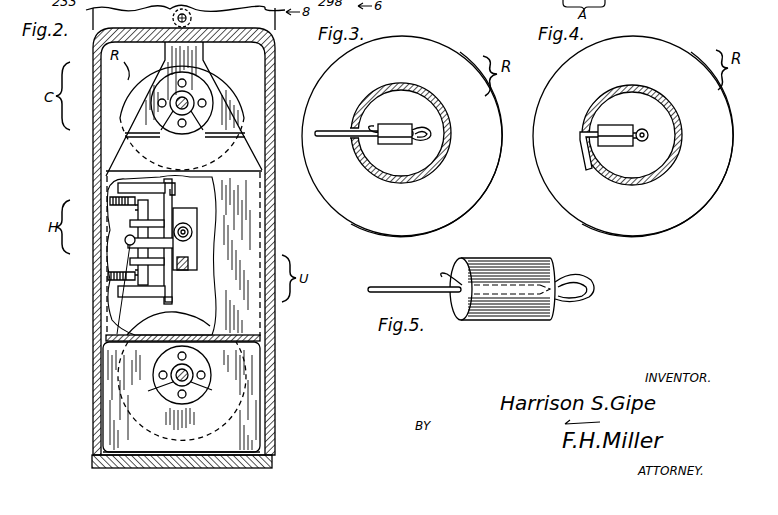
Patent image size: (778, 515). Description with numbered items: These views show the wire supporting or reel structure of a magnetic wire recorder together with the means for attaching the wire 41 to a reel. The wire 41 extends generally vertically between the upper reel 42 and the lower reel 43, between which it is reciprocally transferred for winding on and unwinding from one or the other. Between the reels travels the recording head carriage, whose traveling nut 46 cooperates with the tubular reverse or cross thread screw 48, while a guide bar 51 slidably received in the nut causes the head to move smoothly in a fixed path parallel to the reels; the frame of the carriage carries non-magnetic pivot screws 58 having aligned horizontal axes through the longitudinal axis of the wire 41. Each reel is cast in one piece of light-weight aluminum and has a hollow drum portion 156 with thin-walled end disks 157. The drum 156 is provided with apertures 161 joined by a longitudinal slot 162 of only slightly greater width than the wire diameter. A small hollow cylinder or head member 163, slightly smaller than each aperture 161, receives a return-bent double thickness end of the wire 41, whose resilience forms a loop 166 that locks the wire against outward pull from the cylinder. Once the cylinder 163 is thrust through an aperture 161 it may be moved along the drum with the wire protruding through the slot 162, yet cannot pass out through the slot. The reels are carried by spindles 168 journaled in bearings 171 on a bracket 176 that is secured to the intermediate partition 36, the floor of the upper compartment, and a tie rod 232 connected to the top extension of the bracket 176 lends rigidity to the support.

In FIG. 2, the intermediate partition 36 is at (127, 458).
In FIG. 2, the wire 41 is at (122, 310).
In FIG. 3, the wire 41 is at (330, 140).
In FIG. 4, the wire 41 is at (584, 164).
In FIG. 5, the wire 41 is at (382, 287).
In FIG. 2, the upper reel 42 is at (240, 82).
In FIG. 3, the upper reel 42 is at (470, 206).
In FIG. 4, the upper reel 42 is at (703, 206).
In FIG. 2, the lower reel 43 is at (186, 308).
In FIG. 2, the traveling nut 46 is at (197, 227).
In FIG. 2, the reverse or cross thread screw 48 is at (183, 222).
In FIG. 2, the guide bar 51 is at (188, 270).
In FIG. 2, the pivot screws 58 is at (128, 236).
In FIG. 3, the hollow drum portion 156 is at (438, 98).
In FIG. 4, the hollow drum portion 156 is at (618, 78).
In FIG. 3, the end disks 157 is at (325, 203).
In FIG. 4, the end disks 157 is at (558, 203).
In FIG. 3, the apertures 161 is at (348, 128).
In FIG. 4, the longitudinal slot 162 is at (582, 131).
In FIG. 3, the hollow cylinder or head member 163 is at (391, 145).
In FIG. 4, the hollow cylinder or head member 163 is at (620, 147).
In FIG. 5, the hollow cylinder or head member 163 is at (497, 320).
In FIG. 3, the loop 166 is at (420, 126).
In FIG. 4, the loop 166 is at (645, 128).
In FIG. 5, the loop 166 is at (594, 284).
In FIG. 2, the spindles 168 is at (168, 128).
In FIG. 2, the bearings 171 is at (197, 128).
In FIG. 2, the bracket 176 is at (101, 150).
In FIG. 2, the tie rod 232 is at (192, 18).